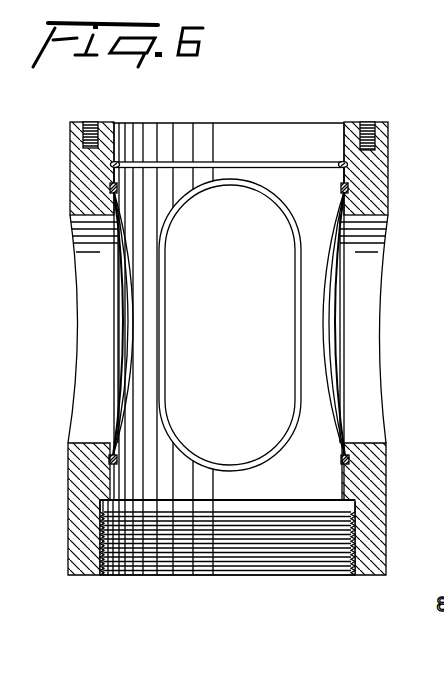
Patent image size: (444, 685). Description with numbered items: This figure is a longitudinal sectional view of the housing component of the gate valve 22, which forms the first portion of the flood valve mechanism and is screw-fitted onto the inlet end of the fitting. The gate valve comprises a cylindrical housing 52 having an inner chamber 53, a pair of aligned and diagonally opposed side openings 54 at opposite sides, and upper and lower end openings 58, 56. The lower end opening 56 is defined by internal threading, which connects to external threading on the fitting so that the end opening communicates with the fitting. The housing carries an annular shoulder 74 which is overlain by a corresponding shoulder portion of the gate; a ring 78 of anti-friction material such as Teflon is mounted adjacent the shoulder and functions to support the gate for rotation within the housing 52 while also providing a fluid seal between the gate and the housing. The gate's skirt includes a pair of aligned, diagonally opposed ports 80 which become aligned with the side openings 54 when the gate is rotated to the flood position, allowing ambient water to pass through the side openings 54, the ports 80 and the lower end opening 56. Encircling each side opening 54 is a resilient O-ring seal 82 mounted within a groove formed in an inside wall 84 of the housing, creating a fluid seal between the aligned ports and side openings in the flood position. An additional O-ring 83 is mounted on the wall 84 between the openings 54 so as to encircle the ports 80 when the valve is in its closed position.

The first portion of the valve mechanism 22 is at (69, 137).
The cylindrical housing 52 is at (68, 518).
The inner chamber 53 is at (273, 274).
The side openings 54 is at (92, 363).
The lower end opening 56 is at (139, 573).
The upper end opening 58 is at (324, 126).
The annular shoulder 74 is at (346, 166).
The ring of anti-friction material 78 is at (112, 169).
The ports 80 is at (328, 309).
The resilient O-ring seal 82 is at (134, 305).
The additional O-rings 83 is at (296, 363).
The inside wall 84 is at (130, 481).